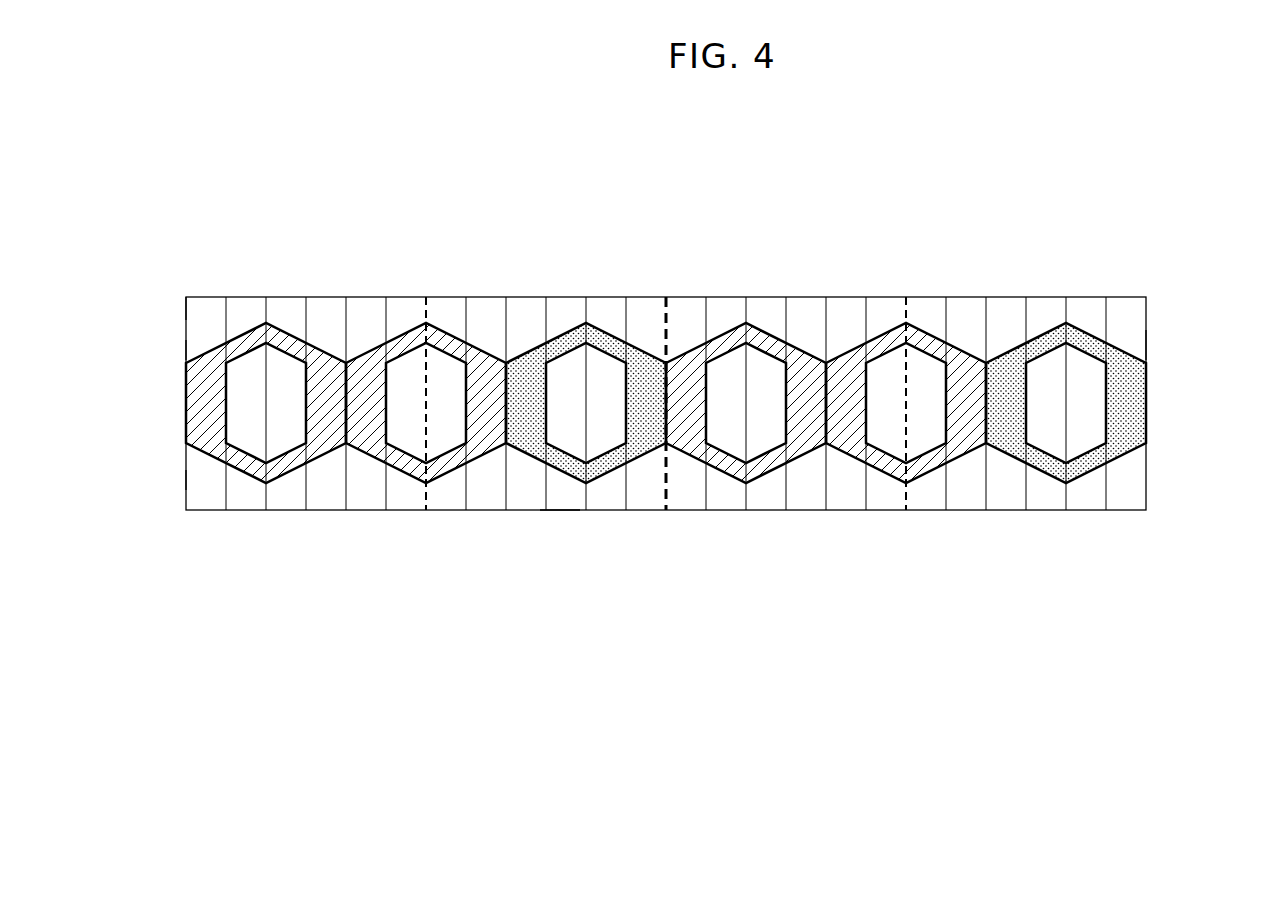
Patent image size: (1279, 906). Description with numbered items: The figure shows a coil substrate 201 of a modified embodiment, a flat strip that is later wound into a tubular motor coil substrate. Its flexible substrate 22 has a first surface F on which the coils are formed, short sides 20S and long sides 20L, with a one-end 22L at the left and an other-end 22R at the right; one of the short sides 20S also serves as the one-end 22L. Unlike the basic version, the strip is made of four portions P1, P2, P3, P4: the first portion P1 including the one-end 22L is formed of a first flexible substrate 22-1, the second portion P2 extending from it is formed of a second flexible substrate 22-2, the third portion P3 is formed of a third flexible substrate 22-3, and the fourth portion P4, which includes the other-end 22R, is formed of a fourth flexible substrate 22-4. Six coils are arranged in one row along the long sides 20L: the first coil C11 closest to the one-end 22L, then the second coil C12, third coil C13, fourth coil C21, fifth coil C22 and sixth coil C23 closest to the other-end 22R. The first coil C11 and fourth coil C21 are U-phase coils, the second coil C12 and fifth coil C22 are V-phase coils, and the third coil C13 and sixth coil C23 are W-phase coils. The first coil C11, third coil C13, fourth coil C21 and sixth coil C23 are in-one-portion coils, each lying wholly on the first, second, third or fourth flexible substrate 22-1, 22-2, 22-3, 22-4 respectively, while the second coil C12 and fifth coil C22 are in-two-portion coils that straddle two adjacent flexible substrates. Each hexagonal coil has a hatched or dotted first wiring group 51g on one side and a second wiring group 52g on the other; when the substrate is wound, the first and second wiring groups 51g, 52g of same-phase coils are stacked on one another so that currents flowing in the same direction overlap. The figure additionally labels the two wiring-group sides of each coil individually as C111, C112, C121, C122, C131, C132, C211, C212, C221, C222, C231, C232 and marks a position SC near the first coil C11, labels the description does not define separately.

The coil substrate 201 is at (188, 297).
The flexible substrate 22 is at (428, 510).
The one-end 22L is at (186, 316).
The other-end 22R is at (1146, 343).
The short sides 20S is at (186, 350).
The long sides 20L is at (557, 510).
The first surface F is at (197, 478).
The slot center SC is at (252, 443).
The first coil C11 is at (256, 338).
The second coil C12 is at (412, 335).
The third coil C13 is at (550, 335).
The fourth coil C21 is at (745, 337).
The fifth coil C22 is at (880, 337).
The sixth coil C23 is at (1097, 337).
The first coil side of coil C11 C111 is at (208, 445).
The second coil side of coil C11 C112 is at (332, 453).
The first coil side of coil C12 C121 is at (372, 455).
The second coil side of coil C12 C122 is at (490, 450).
The first coil side of coil C13 C131 is at (530, 440).
The second coil side of coil C13 C132 is at (660, 440).
The first coil side of coil C21 C211 is at (688, 447).
The second coil side of coil C21 C212 is at (807, 453).
The first coil side of coil C22 C221 is at (850, 457).
The second coil side of coil C22 C222 is at (967, 450).
The first coil side of coil C23 C231 is at (1008, 455).
The second coil side of coil C23 C232 is at (1122, 447).
The first flexible substrate 22-1 is at (293, 510).
The second flexible substrate 22-2 is at (600, 510).
The third flexible substrate 22-3 is at (823, 510).
The fourth flexible substrate 22-4 is at (1083, 510).
The first wiring group 51g is at (608, 411).
The second wiring group 52g is at (728, 411).
The first portion P1 is at (192, 197).
The second portion P2 is at (428, 218).
The third portion P3 is at (652, 202).
The fourth portion P4 is at (885, 228).